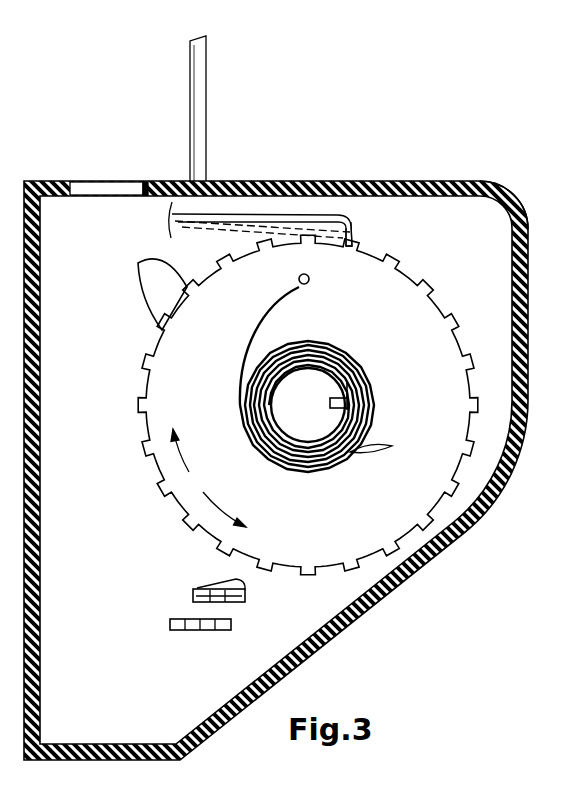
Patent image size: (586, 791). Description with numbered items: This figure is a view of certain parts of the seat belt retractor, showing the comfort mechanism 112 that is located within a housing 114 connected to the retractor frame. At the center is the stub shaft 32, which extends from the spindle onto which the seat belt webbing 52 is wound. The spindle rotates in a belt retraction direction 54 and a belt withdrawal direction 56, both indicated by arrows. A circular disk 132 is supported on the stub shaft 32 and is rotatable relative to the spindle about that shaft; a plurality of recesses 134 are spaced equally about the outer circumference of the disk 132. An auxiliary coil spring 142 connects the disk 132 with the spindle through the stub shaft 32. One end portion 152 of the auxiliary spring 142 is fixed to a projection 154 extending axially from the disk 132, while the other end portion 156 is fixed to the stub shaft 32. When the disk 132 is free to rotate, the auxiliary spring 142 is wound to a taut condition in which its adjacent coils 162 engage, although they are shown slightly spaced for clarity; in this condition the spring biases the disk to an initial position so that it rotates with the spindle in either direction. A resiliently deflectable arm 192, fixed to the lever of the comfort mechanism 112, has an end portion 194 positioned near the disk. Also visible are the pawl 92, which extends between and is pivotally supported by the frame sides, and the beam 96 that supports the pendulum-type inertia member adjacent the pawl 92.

The stub shaft 32 is at (308, 405).
The seat belt webbing 52 is at (198, 78).
The belt retraction direction 54 is at (202, 492).
The belt withdrawal direction 56 is at (183, 458).
The pawl 92 is at (247, 585).
The beam 96 is at (200, 632).
The comfort mechanism 112 is at (393, 218).
The housing 114 is at (527, 246).
The circular disk 132 is at (350, 542).
The recesses 134 is at (139, 265).
The auxiliary coil spring 142 is at (347, 465).
The end portion 152 is at (299, 289).
The projection 154 is at (314, 275).
The end portion 156 is at (346, 388).
The coils 162 is at (391, 447).
The resiliently deflectable arm 192 is at (283, 220).
The end portion 194 is at (356, 234).